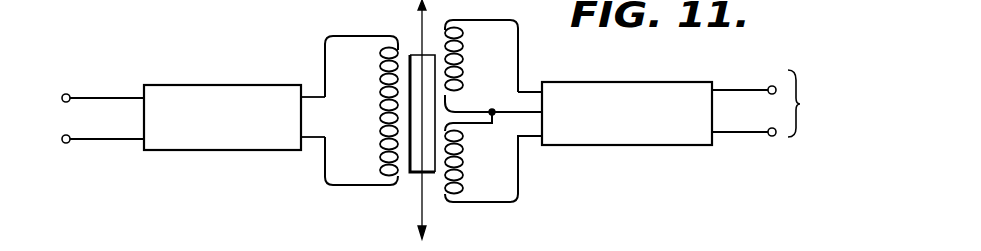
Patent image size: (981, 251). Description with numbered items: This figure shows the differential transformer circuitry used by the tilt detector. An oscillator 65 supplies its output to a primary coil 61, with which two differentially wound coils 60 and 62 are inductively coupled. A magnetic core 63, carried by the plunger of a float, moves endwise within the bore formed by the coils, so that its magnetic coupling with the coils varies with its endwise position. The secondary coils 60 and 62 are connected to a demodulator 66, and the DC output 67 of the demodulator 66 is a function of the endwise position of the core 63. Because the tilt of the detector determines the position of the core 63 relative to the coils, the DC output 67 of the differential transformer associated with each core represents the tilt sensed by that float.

The differential transformer coil 60 is at (462, 65).
The coil 61 is at (380, 123).
The differential transformer coil 62 is at (460, 160).
The magnetic core 63 is at (412, 167).
The oscillator 65 is at (202, 92).
The demodulator 66 is at (623, 133).
The DC output 67 is at (775, 103).